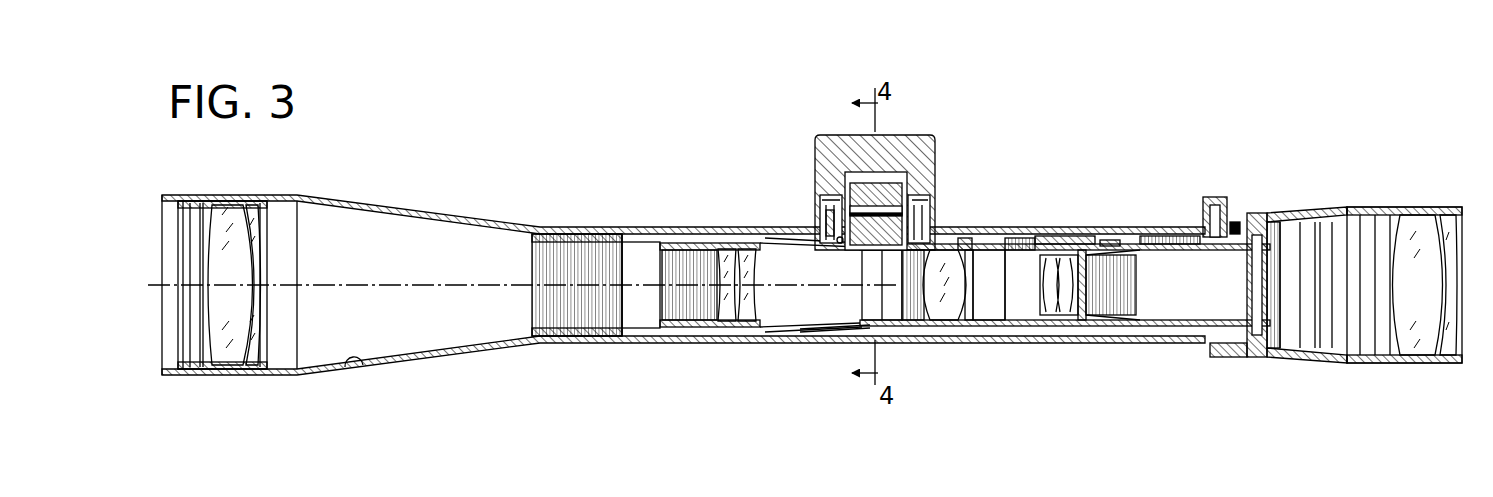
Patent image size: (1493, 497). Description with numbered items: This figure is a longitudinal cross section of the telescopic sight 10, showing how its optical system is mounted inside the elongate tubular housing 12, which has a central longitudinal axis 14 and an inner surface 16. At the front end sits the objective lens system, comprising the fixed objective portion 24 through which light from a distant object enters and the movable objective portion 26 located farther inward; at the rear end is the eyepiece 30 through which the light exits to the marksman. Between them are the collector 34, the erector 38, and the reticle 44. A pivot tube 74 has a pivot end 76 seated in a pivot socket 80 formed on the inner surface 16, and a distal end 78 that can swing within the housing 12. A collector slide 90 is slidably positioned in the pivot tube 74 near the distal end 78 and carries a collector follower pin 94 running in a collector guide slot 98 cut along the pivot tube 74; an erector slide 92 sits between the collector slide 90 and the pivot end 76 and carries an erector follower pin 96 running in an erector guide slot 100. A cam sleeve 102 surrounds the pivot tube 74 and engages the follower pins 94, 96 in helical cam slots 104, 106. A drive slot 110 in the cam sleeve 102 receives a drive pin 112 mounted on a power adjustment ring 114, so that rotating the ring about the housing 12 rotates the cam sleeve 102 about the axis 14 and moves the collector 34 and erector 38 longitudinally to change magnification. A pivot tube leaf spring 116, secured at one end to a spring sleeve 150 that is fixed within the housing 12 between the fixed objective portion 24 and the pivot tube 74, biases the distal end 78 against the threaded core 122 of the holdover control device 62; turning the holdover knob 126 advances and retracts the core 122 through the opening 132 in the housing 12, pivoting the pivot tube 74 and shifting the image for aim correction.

The telescopic sight 10 is at (1110, 71).
The housing 12 is at (391, 203).
The central longitudinal axis 14 is at (343, 283).
The inner surface 16 is at (357, 366).
The fixed objective portion 24 is at (240, 375).
The movable objective portion 26 is at (752, 279).
The eyepiece 30 is at (1423, 367).
The collector 34 is at (936, 333).
The erector 38 is at (1058, 312).
The reticle 44 is at (1288, 348).
The holdover control device 62 is at (954, 109).
The pivot tube 74 is at (1153, 329).
The pivot end 76 is at (1305, 228).
The distal end 78 is at (855, 300).
The pivot socket 80 is at (1240, 350).
The collector slide 90 is at (966, 327).
The erector slide 92 is at (1103, 333).
The collector follower pin 94 is at (968, 265).
The erector follower pin 96 is at (1109, 243).
The collector guide slot 98 is at (1012, 247).
The erector guide slot 100 is at (1153, 238).
The cam sleeve 102 is at (1062, 243).
The helical cam slot 104 is at (963, 249).
The helical cam slot 106 is at (1087, 262).
The drive slot 110 is at (1254, 212).
The drive pin 112 is at (1242, 214).
The power adjustment ring 114 is at (1235, 200).
The pivot tube leaf spring 116 is at (820, 355).
The threaded core 122 is at (832, 218).
The holdover knob 126 is at (935, 153).
The opening 132 is at (838, 240).
The spring sleeve 150 is at (608, 340).